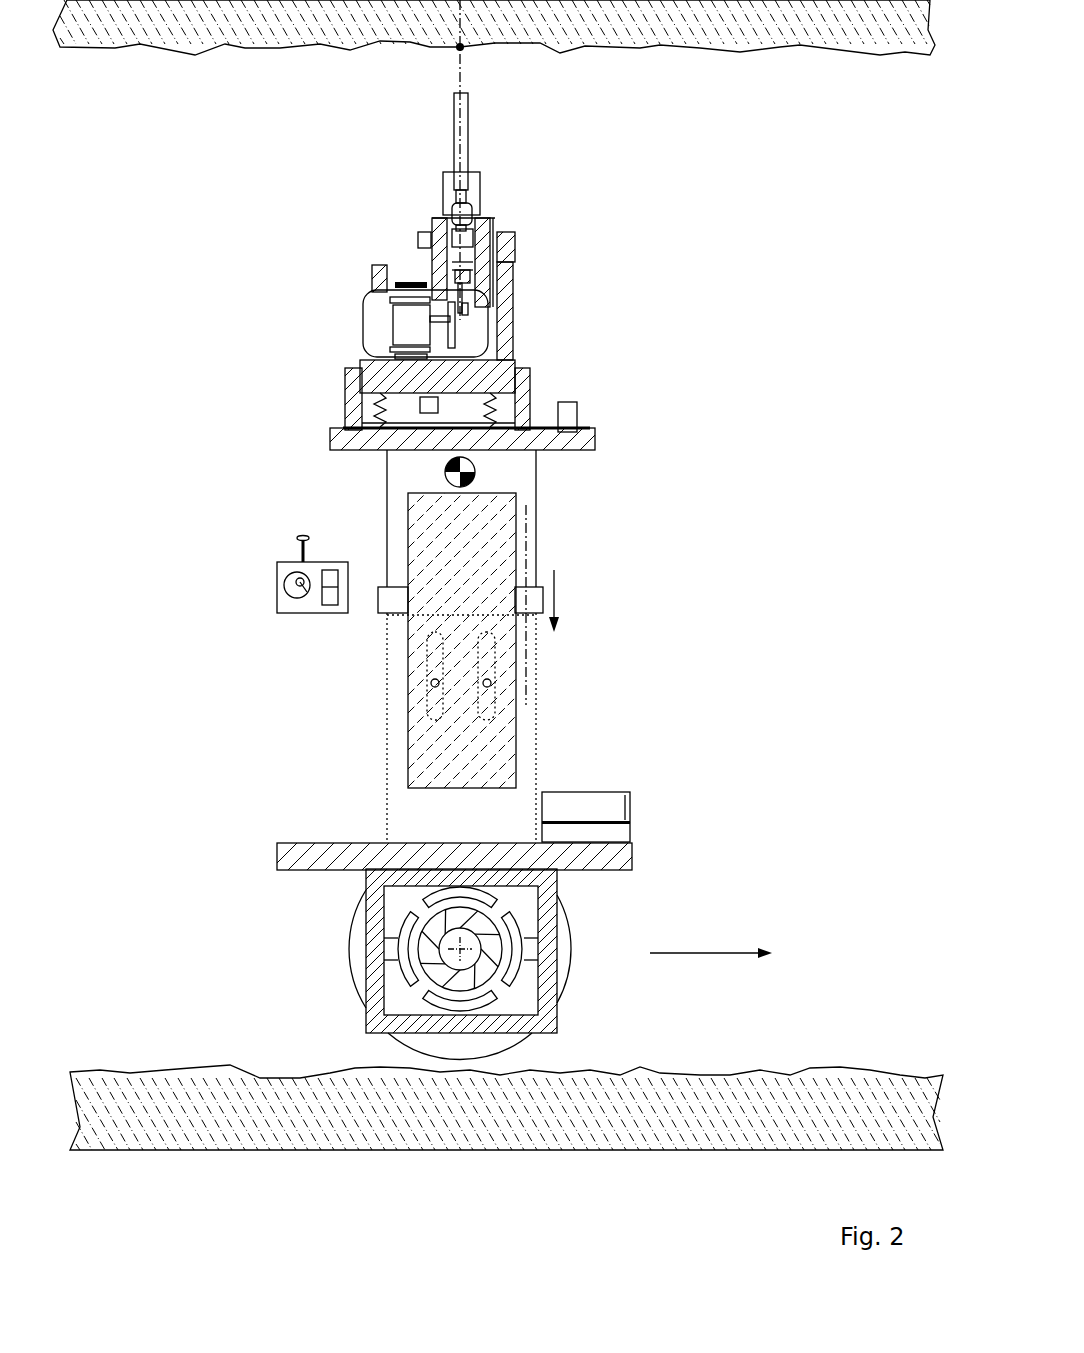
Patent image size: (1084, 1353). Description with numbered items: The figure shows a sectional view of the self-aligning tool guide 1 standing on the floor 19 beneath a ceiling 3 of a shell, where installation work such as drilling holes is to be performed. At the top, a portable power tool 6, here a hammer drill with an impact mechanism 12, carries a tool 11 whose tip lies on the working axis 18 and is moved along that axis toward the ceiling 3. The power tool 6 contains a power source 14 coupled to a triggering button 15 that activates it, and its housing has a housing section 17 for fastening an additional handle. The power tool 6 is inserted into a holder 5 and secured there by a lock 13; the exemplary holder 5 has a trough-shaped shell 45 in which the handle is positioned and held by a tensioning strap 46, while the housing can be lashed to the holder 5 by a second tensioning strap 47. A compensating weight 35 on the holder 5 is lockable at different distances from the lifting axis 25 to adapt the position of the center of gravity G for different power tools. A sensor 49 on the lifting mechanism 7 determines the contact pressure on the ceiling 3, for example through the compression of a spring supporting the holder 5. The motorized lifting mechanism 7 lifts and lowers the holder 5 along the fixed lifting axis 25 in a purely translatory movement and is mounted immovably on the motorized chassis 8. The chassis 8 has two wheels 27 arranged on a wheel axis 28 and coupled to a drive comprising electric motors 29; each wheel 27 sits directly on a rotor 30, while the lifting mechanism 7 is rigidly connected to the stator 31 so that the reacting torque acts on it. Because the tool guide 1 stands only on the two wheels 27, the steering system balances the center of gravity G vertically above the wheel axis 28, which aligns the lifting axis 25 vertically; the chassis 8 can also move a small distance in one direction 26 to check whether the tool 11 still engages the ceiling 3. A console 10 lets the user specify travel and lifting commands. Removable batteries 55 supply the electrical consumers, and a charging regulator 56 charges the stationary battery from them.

The self-aligning tool guide 1 is at (278, 196).
The ceiling 3 is at (270, 58).
The holder 5 is at (162, 330).
The portable power tool 6 is at (162, 77).
The lifting mechanism 7 is at (162, 455).
The chassis 8 is at (162, 852).
The console 10 is at (292, 568).
The tool 11 is at (463, 135).
The impact mechanism 12 is at (463, 245).
The lock 13 is at (293, 258).
The power source 14 is at (403, 332).
The triggering button 15 is at (408, 288).
The housing section 17 is at (487, 240).
The working axis 18 is at (468, 78).
The floor 19 is at (712, 1055).
The lifting axis 25 is at (528, 540).
The direction 26 is at (707, 947).
The wheel 27 is at (470, 1050).
The wheel axis 28 is at (460, 960).
The electric motor 29 is at (417, 1218).
The rotor 30 is at (453, 960).
The stator 31 is at (412, 980).
The compensating weight 35 is at (575, 416).
The trough-shaped shell 45 is at (378, 366).
The tensioning strap 46 is at (385, 282).
The second tensioning strap 47 is at (418, 240).
The sensor 49 is at (428, 405).
The battery 55 is at (600, 810).
The charging regulator 56 is at (600, 833).
The center of gravity G is at (468, 472).